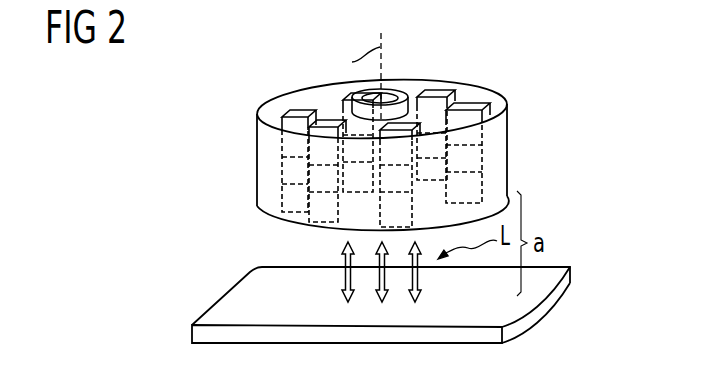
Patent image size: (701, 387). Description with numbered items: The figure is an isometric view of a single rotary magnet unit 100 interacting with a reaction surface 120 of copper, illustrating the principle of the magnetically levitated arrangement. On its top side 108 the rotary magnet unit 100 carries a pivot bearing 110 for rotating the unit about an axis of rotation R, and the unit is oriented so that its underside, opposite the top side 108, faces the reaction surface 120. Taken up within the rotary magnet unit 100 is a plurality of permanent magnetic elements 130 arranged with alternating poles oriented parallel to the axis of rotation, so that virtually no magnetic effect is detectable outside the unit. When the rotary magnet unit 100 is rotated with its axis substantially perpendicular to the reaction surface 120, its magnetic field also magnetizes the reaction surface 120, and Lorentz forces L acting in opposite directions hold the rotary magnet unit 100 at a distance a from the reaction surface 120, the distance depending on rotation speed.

The rotary magnet unit 100 is at (229, 94).
The top side 108 is at (496, 93).
The pivot bearing 110 is at (400, 85).
The reaction surface 120 is at (249, 291).
The permanent magnetic elements 130 is at (322, 198).